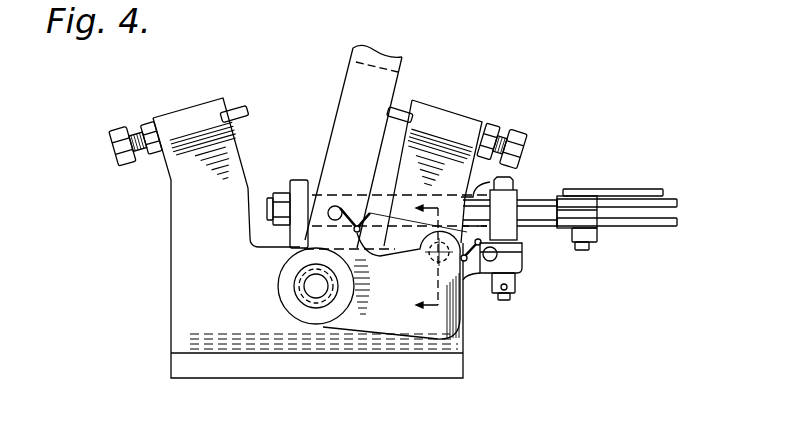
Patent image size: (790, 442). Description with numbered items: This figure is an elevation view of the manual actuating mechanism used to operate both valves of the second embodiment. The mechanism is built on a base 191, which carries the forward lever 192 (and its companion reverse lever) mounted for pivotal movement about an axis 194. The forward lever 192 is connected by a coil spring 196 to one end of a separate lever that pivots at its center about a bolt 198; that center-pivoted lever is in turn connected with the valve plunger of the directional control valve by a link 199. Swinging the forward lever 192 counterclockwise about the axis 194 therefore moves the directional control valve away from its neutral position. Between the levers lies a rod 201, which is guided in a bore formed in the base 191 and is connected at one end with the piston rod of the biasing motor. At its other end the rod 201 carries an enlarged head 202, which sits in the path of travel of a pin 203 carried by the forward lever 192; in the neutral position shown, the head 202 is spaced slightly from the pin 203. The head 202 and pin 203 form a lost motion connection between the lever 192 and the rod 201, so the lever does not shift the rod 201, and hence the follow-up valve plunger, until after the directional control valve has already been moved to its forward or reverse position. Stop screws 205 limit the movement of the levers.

The base 191 is at (195, 331).
The forward lever 192 is at (382, 80).
The axis 194 is at (316, 286).
The coil spring 196 is at (358, 232).
The bolt 198 is at (515, 296).
The link 199 is at (557, 190).
The rod 201 is at (512, 180).
The enlarged head 202 is at (297, 185).
The pin 203 is at (336, 206).
The stop screws 205 is at (139, 158).